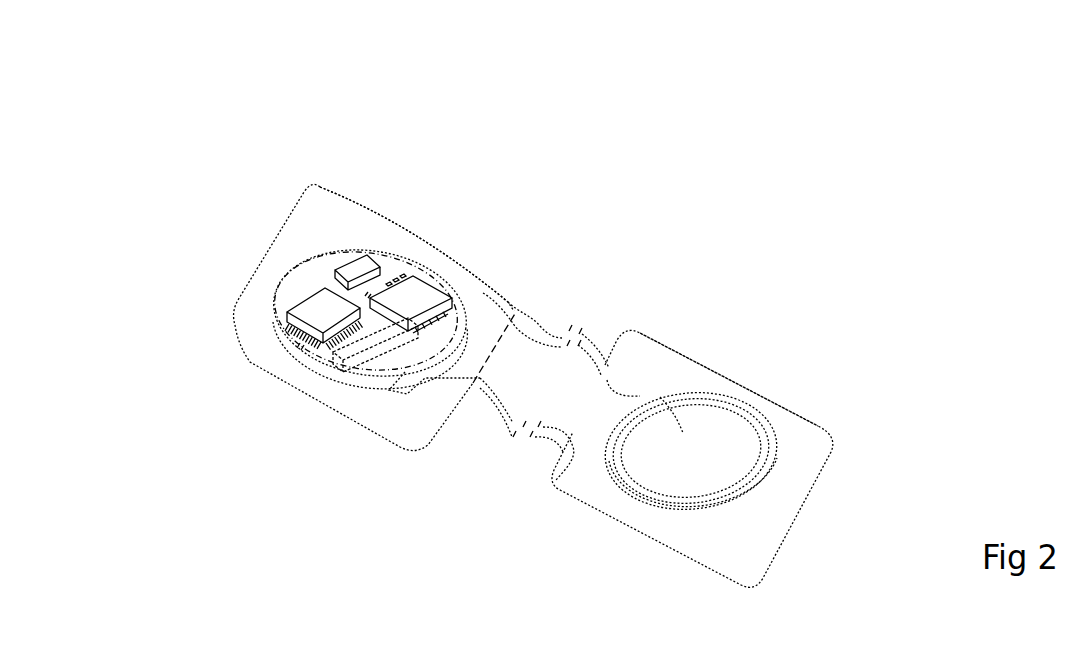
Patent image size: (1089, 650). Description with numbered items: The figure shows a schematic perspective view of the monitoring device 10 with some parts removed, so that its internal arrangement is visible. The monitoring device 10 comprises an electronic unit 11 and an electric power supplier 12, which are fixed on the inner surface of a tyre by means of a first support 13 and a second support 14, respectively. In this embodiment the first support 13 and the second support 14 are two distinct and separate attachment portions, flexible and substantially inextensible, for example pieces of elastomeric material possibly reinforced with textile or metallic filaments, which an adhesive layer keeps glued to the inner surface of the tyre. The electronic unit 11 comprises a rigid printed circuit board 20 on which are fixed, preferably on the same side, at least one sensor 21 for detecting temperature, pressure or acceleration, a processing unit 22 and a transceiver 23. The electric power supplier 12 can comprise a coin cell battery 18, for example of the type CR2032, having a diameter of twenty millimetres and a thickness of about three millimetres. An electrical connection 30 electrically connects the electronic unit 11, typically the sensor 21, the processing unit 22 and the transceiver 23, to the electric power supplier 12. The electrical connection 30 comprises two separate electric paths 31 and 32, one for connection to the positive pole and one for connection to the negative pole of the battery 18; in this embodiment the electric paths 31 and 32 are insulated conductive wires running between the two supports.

The monitoring device 10 is at (550, 348).
The electronic unit 11 is at (274, 348).
The electric power supplier 12 is at (621, 505).
The first support 13 is at (333, 210).
The second support 14 is at (793, 427).
The coin cell battery 18 is at (707, 474).
The rigid printed circuit board 20 is at (468, 241).
The sensor 21 is at (350, 270).
The processing unit 22 is at (303, 310).
The transceiver 23 is at (432, 300).
The electrical connection 30 is at (513, 397).
The electric path 31 is at (573, 457).
The electric path 32 is at (535, 325).